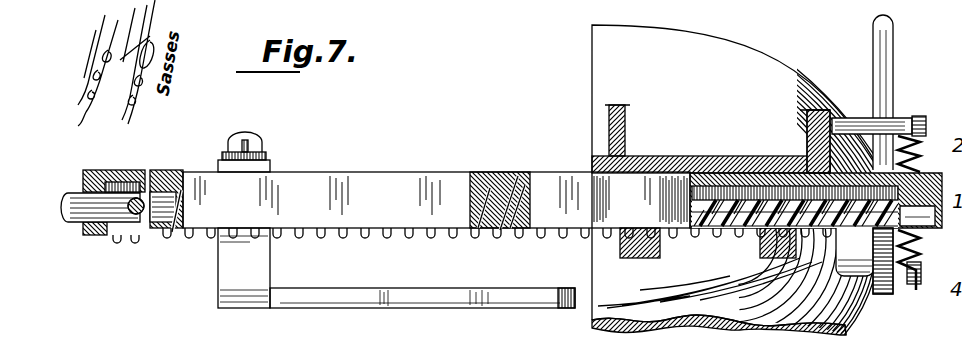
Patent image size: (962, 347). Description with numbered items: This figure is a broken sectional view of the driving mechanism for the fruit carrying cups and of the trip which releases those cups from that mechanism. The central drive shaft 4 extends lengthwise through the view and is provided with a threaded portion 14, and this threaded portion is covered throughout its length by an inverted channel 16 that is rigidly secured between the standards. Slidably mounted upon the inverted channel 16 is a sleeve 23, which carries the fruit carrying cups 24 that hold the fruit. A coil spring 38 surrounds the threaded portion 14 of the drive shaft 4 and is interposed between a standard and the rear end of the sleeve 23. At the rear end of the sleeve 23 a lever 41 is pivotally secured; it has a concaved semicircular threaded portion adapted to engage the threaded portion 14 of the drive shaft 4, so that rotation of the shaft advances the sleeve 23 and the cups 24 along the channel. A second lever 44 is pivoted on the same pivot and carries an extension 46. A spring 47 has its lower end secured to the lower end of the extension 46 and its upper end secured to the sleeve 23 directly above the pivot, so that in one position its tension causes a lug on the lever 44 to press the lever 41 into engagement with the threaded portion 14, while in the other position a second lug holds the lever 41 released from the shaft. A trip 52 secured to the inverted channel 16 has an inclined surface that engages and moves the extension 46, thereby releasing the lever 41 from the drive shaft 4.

The drive shaft 4 is at (120, 225).
The threaded portion 14 is at (795, 175).
The inverted channel 16 is at (177, 168).
The sleeve 23 is at (682, 165).
The fruit carrying cup 24 is at (560, 173).
The coil spring 38 is at (362, 234).
The lever 41 is at (855, 252).
The lever 44 is at (893, 60).
The extension 46 is at (893, 294).
The spring 47 is at (912, 152).
The trip 52 is at (388, 289).